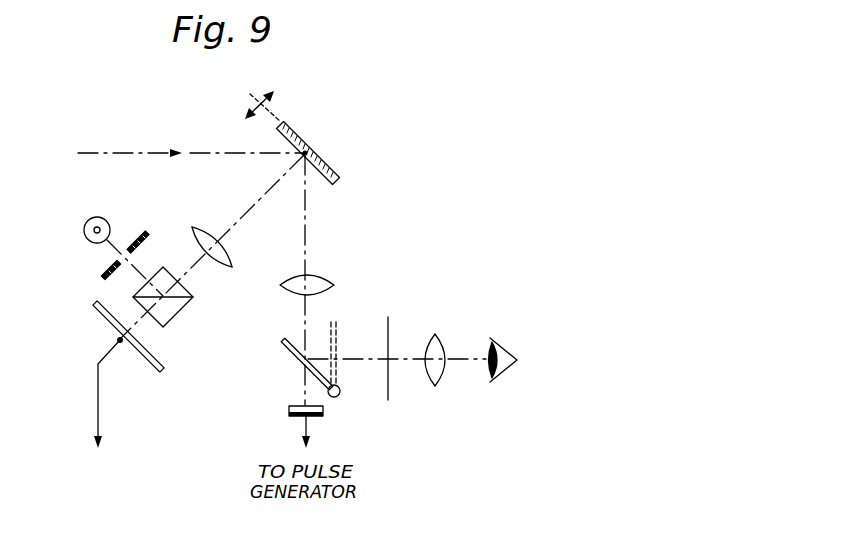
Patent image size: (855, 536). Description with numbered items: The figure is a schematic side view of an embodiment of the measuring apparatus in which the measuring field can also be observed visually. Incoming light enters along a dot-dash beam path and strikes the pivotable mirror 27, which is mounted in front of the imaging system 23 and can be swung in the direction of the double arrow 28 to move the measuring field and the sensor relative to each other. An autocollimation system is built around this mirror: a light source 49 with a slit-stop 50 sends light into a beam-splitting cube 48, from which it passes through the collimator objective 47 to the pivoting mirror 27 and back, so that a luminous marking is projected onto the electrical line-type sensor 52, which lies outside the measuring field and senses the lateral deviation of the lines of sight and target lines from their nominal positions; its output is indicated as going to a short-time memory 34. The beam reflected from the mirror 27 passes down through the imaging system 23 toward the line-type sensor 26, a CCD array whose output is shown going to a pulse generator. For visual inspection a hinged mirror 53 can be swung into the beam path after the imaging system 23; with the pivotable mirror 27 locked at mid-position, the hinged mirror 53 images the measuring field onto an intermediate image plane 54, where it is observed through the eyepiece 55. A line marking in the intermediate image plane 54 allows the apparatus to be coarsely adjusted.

The imaging system 23 is at (317, 279).
The line-type sensor 26 is at (289, 410).
The pivotable mirror 27 is at (333, 164).
The double arrow 28 is at (256, 103).
The short-time memory 34 is at (96, 420).
The collimator objective 47 is at (205, 233).
The beam-splitting cube 48 is at (168, 307).
The light source 49 is at (84, 229).
The slit-stop 50 is at (102, 270).
The electrical line-type sensor 52 is at (103, 318).
The hinged mirror 53 is at (286, 356).
The intermediate image plane 54 is at (388, 383).
The eyepiece 55 is at (434, 344).